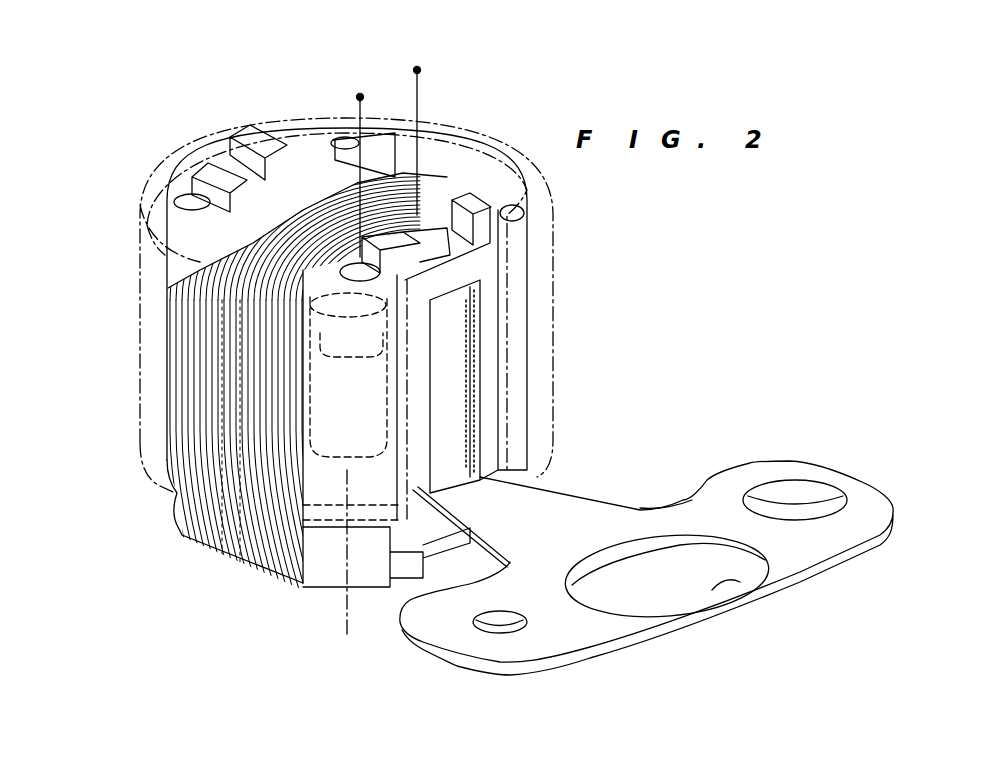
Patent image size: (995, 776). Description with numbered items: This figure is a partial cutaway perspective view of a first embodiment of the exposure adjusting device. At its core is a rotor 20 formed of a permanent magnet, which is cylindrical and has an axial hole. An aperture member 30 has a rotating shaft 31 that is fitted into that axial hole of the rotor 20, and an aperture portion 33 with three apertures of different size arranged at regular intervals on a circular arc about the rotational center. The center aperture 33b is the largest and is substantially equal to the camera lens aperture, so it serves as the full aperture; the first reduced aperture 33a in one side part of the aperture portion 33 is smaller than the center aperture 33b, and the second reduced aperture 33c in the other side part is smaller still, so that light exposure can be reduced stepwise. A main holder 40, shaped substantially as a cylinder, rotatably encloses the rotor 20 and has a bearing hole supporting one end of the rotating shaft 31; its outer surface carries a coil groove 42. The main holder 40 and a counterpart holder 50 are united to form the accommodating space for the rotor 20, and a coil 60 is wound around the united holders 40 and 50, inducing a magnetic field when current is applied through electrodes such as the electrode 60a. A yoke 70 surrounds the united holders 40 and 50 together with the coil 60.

The rotor 20 is at (455, 372).
The aperture member 30 is at (645, 638).
The rotating shaft 31 is at (385, 434).
The aperture portion 33 is at (707, 497).
The first reduced aperture 33a is at (820, 490).
The center aperture 33b is at (756, 590).
The second reduced aperture 33c is at (522, 612).
The main holder 40 is at (220, 142).
The coil groove 42 is at (265, 208).
The counterpart holder 50 is at (335, 580).
The coil 60 is at (197, 390).
The electrode 60a is at (360, 97).
The yoke 70 is at (553, 298).